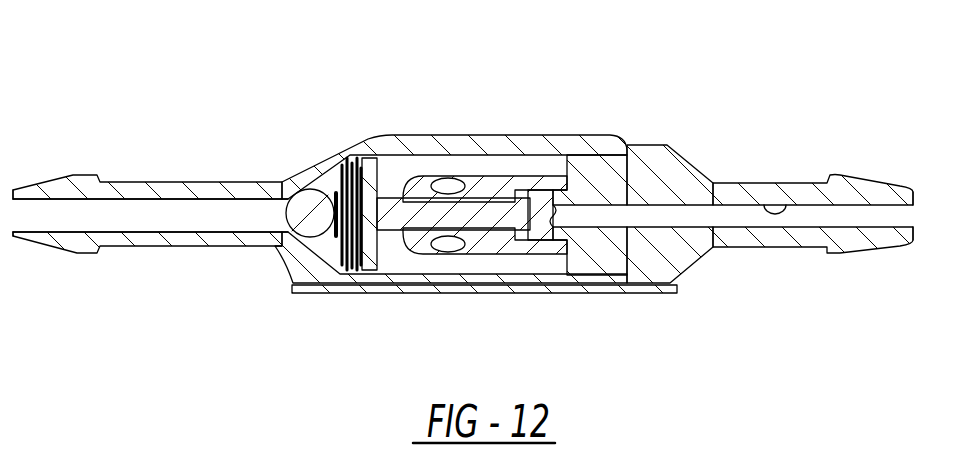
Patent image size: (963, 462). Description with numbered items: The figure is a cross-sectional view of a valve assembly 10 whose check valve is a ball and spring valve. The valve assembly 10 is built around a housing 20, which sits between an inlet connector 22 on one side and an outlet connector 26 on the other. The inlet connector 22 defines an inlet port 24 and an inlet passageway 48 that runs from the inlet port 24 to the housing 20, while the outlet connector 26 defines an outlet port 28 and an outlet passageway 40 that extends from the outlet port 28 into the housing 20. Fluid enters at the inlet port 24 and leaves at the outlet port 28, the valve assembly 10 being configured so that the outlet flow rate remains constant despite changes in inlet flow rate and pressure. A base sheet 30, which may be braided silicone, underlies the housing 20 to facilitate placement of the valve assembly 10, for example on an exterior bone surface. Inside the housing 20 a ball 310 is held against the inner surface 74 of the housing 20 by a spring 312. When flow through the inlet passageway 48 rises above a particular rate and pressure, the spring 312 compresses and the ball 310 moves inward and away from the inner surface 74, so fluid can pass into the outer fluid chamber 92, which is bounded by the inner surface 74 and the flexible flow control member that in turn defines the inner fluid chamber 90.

The valve assembly 10 is at (203, 66).
The housing 20 is at (417, 135).
The inlet connector 22 is at (143, 181).
The inlet port 24 is at (7, 235).
The outlet connector 26 is at (738, 183).
The outlet port 28 is at (917, 235).
The base sheet 30 is at (610, 293).
The outlet passageway 40 is at (775, 205).
The inlet passageway 48 is at (214, 200).
The inner surface 74 is at (320, 180).
The inner fluid chamber 90 is at (484, 192).
The outer fluid chamber 92 is at (488, 164).
The ball 310 is at (293, 197).
The spring 312 is at (335, 205).